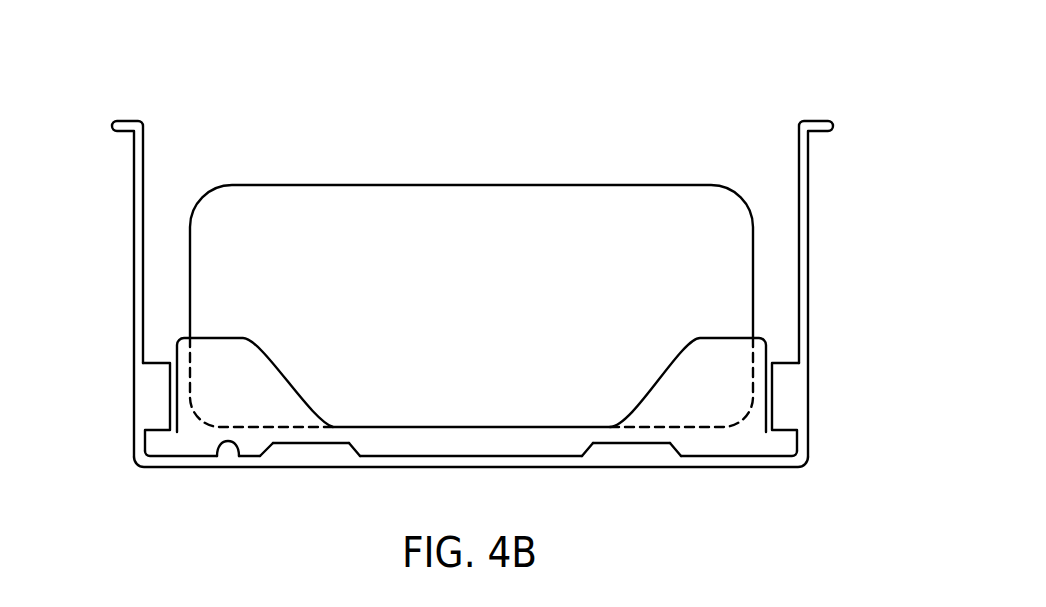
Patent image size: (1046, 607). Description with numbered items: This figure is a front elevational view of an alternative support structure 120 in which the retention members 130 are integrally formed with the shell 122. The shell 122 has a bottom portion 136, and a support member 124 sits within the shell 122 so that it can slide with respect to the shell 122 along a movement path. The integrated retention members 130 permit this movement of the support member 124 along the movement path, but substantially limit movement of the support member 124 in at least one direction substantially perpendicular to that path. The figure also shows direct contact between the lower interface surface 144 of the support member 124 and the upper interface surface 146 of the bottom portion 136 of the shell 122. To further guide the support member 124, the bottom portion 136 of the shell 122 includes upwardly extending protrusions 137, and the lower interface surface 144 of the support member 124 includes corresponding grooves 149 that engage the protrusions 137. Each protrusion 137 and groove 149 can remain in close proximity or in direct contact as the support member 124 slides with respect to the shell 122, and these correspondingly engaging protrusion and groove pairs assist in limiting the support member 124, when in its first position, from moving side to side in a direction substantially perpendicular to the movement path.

The support structure 120 is at (705, 100).
The shell 122 is at (118, 243).
The support member 124 is at (197, 441).
The retention member 130 is at (152, 398).
The bottom portion 136 is at (727, 462).
The protrusion 137 is at (290, 452).
The lower interface surface 144 is at (218, 450).
The upper interface surface 146 is at (474, 459).
The groove 149 is at (345, 458).